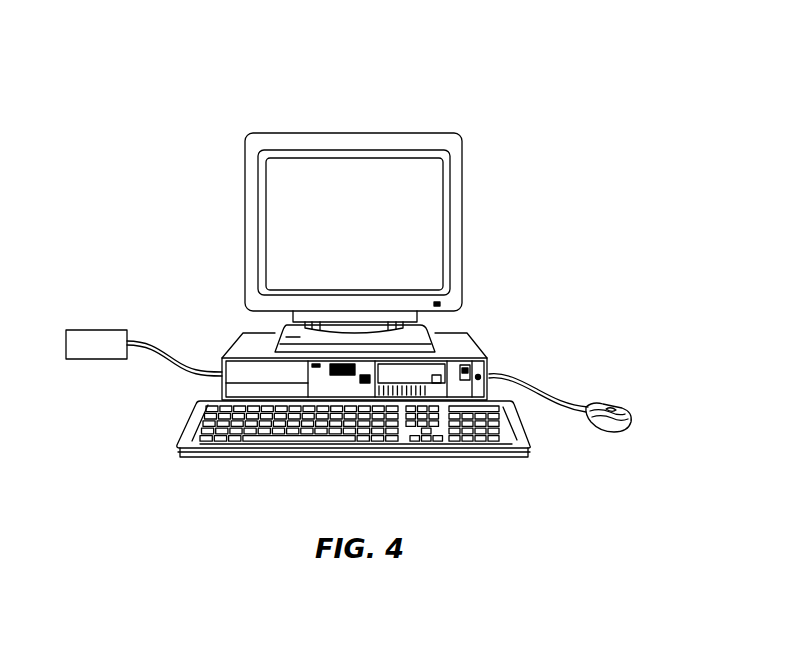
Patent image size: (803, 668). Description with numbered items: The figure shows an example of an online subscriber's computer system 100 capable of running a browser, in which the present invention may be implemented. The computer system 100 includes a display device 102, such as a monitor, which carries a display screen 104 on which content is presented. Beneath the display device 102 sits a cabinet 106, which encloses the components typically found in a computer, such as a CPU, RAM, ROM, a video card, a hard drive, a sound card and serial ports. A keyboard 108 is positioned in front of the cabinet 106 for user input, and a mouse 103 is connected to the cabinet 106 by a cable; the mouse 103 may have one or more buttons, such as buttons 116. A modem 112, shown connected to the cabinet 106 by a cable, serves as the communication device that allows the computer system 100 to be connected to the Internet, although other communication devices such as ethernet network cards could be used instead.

The computer system 100 is at (548, 55).
The display device 102 is at (463, 192).
The mouse 103 is at (622, 434).
The display screen 104 is at (335, 158).
The cabinet 106 is at (476, 347).
The keyboard 108 is at (343, 458).
The modem 112 is at (98, 330).
The buttons 116 is at (609, 411).